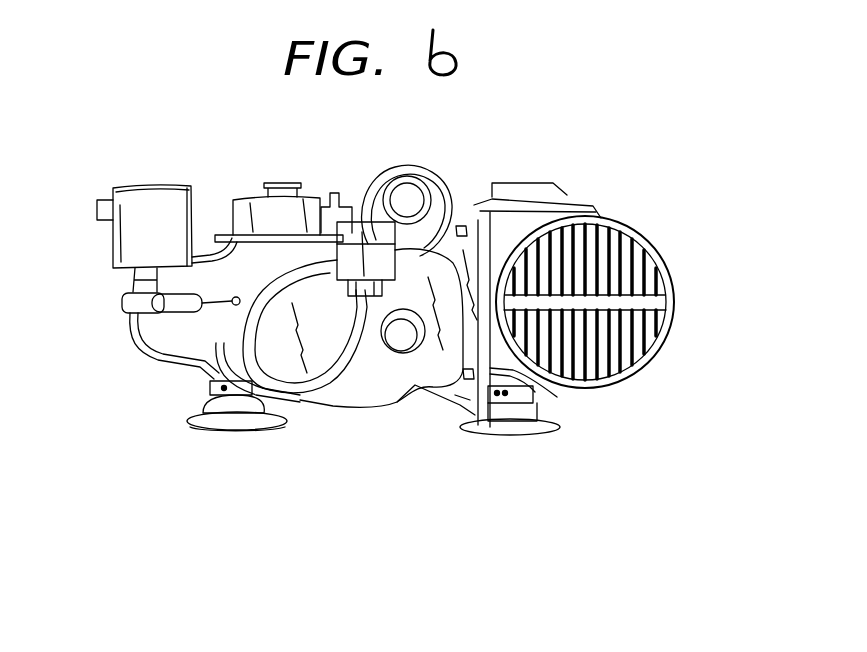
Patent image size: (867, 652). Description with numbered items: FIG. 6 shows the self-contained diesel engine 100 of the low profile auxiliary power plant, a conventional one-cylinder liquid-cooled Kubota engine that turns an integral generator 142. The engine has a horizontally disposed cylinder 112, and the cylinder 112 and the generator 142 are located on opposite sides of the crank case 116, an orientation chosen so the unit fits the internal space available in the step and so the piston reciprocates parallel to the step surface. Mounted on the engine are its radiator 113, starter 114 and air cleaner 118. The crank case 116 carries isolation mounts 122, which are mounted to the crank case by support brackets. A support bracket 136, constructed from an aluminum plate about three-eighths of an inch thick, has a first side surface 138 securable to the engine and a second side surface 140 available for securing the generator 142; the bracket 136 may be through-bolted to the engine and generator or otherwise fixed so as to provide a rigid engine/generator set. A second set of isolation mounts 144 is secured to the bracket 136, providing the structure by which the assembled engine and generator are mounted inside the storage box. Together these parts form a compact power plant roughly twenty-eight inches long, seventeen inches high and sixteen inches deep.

The diesel engine 100 is at (583, 153).
The cylinder 112 is at (259, 163).
The radiator 113 is at (308, 192).
The starter 114 is at (412, 168).
The crank case 116 is at (405, 368).
The air cleaner 118 is at (104, 242).
The isolation mounts 122 is at (187, 420).
The support bracket 136 is at (483, 427).
The first side surface 138 is at (465, 397).
The second side surface 140 is at (557, 397).
The generator 142 is at (656, 343).
The second set of isolation mounts 144 is at (546, 432).